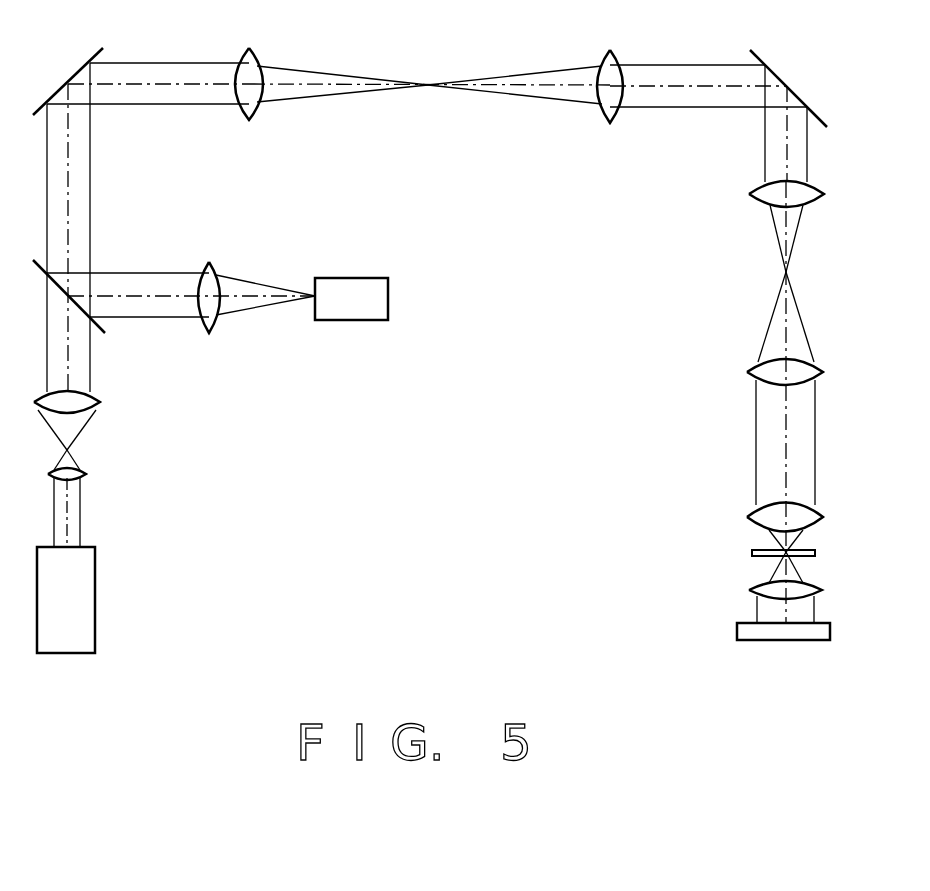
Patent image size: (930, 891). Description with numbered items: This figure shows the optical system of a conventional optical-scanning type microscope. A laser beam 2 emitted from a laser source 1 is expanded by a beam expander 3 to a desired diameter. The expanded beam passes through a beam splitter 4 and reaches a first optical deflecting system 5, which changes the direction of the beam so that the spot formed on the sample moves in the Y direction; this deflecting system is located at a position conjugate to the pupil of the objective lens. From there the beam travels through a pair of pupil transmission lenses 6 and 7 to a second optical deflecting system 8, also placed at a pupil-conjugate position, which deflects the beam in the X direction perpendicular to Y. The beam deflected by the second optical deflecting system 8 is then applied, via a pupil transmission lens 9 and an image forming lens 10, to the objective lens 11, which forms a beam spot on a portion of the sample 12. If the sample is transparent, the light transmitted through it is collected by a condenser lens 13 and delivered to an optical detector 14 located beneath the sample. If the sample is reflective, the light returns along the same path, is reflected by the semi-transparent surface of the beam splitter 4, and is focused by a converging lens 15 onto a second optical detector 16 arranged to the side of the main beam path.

The laser source 1 is at (96, 609).
The laser beam 2 is at (82, 517).
The beam expander 3 is at (100, 393).
The beam splitter 4 is at (45, 272).
The first optical deflecting system 5 is at (103, 48).
The pupil transmission lens 6 is at (249, 48).
The pupil transmission lens 7 is at (610, 50).
The second optical deflecting system 8 is at (752, 50).
The pupil transmission lens 9 is at (819, 188).
The image forming lens 10 is at (816, 369).
The objective lens 11 is at (818, 515).
The sample 12 is at (818, 553).
The lens 13 is at (818, 594).
The optical detector 14 is at (831, 632).
The converging lens 15 is at (205, 264).
The optical detector 16 is at (344, 278).